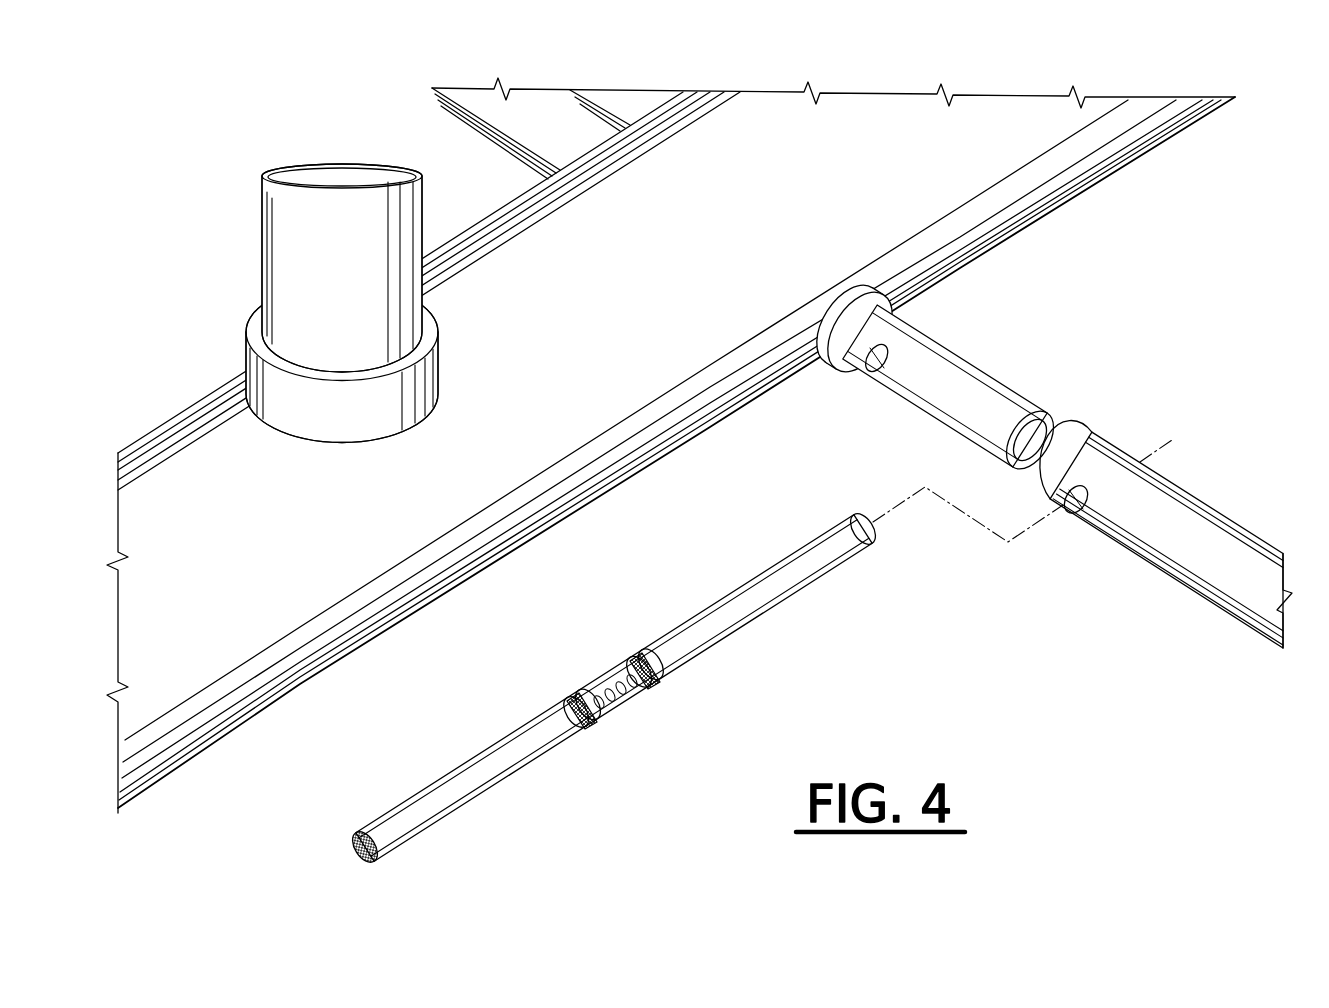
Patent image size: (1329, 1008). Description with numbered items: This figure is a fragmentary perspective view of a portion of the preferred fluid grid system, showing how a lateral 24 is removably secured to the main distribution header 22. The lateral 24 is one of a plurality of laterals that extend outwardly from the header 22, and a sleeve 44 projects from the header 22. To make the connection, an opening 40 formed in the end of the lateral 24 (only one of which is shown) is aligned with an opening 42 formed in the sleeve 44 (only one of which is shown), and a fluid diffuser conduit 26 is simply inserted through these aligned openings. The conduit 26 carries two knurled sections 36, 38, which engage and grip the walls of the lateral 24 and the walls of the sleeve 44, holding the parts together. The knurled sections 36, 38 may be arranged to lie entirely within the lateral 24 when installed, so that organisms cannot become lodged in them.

The main distribution header 22 is at (697, 257).
The lateral 24 is at (1166, 534).
The fluid diffuser conduit 26 is at (613, 687).
The knurled section 36 is at (597, 722).
The knurled section 38 is at (658, 677).
The opening 40 is at (1070, 518).
The opening 42 is at (873, 373).
The sleeve 44 is at (933, 375).